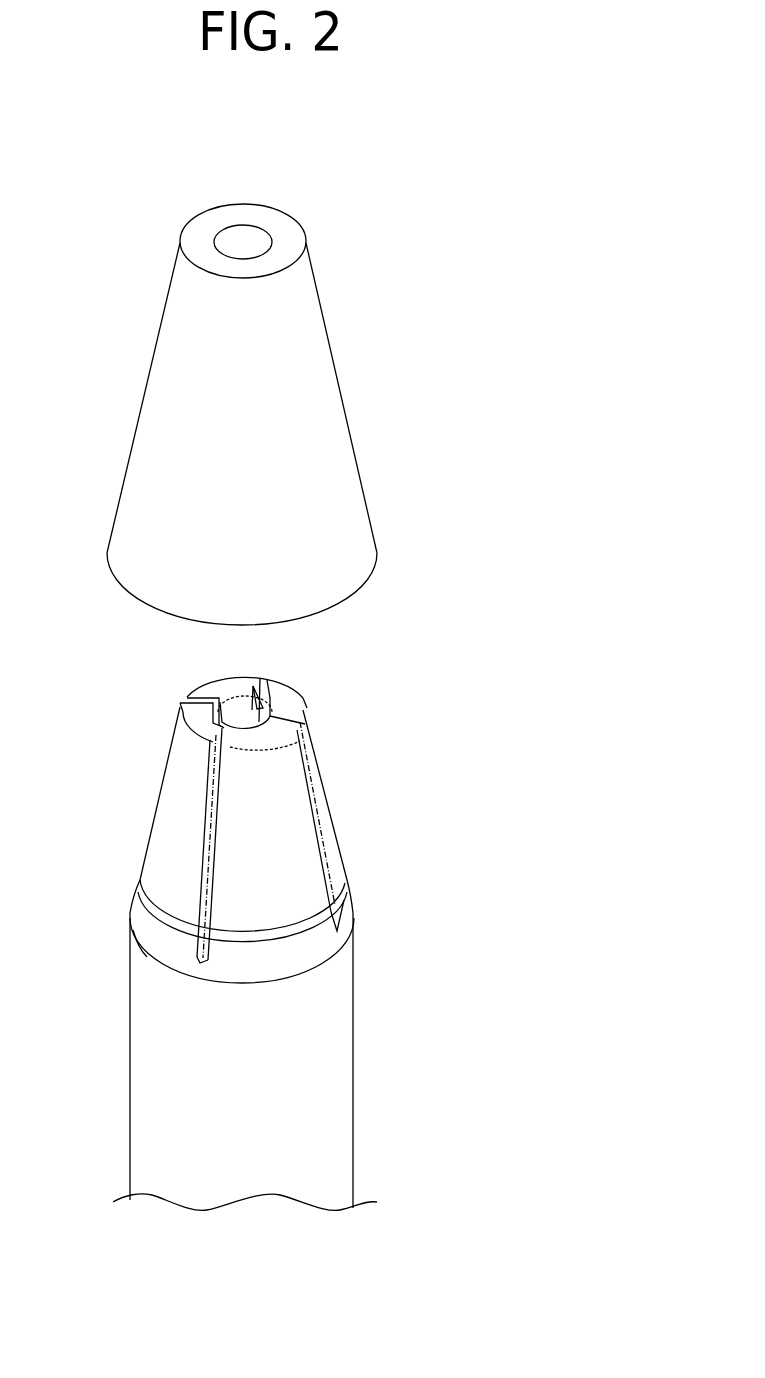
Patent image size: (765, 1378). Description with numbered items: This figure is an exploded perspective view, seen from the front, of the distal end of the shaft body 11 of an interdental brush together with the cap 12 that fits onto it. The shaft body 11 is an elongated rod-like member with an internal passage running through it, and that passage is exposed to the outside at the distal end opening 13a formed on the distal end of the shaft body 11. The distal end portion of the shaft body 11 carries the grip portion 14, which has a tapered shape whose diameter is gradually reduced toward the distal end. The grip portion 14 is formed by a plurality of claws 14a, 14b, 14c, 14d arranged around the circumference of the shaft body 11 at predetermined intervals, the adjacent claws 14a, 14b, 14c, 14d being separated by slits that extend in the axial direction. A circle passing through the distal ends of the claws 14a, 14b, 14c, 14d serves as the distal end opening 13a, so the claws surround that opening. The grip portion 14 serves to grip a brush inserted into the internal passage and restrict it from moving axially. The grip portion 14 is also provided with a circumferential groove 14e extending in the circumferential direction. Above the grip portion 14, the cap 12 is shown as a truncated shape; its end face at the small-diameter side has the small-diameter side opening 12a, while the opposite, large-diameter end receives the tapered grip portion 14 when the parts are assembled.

The shaft body 11 is at (353, 1052).
The cap 12 is at (333, 358).
The small-diameter side opening 12a is at (247, 237).
The distal end opening 13a is at (250, 711).
The grip portion 14 is at (307, 798).
The claw 14a is at (217, 692).
The claw 14b is at (198, 723).
The claw 14c is at (267, 737).
The claw 14d is at (292, 702).
The circumferential groove 14e is at (345, 880).